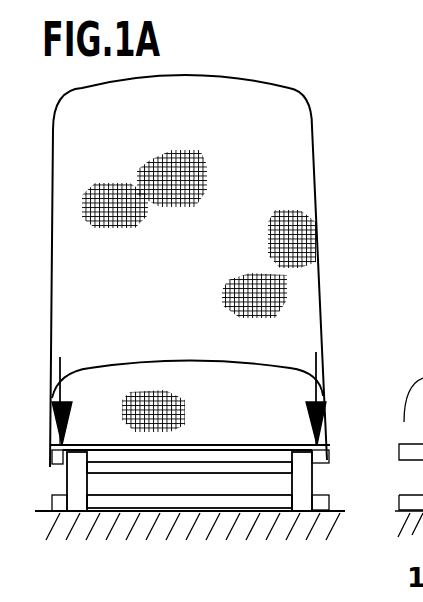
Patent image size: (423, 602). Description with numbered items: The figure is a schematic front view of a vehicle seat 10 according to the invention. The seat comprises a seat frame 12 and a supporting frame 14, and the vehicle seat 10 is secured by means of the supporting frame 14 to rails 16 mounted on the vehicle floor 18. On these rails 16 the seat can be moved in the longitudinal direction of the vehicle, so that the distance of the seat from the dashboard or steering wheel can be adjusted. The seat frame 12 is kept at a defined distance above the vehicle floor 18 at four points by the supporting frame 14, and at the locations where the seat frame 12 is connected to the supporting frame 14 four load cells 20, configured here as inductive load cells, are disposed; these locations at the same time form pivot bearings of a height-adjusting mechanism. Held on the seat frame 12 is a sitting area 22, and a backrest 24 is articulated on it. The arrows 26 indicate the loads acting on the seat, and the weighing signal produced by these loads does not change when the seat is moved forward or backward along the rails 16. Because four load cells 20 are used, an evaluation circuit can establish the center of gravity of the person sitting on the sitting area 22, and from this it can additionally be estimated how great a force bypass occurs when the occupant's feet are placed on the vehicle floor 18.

The vehicle seat 10 is at (214, 334).
The seat frame 12 is at (48, 466).
The supporting frame 14 is at (220, 480).
The rails 16 is at (58, 515).
The vehicle floor 18 is at (160, 518).
The load cells 20 is at (330, 444).
The sitting area 22 is at (193, 363).
The backrest 24 is at (322, 234).
The arrows 26 is at (318, 357).